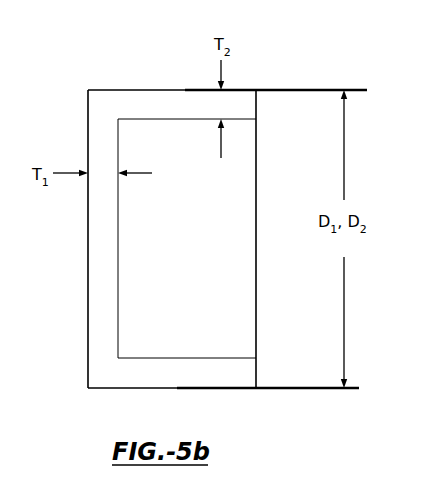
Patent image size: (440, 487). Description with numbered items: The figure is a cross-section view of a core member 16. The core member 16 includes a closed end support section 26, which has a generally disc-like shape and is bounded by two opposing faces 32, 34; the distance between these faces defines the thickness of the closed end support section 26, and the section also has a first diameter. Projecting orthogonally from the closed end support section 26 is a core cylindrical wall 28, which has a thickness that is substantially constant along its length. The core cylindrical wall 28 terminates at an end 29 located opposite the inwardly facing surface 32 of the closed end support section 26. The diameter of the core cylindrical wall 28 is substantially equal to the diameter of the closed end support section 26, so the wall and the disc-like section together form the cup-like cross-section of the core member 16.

The core member 16 is at (78, 83).
The closed end support section 26 is at (94, 332).
The core cylindrical wall 28 is at (173, 97).
The end 29 is at (255, 107).
The inwardly facing surface 32 is at (118, 222).
The opposing face 34 is at (88, 246).